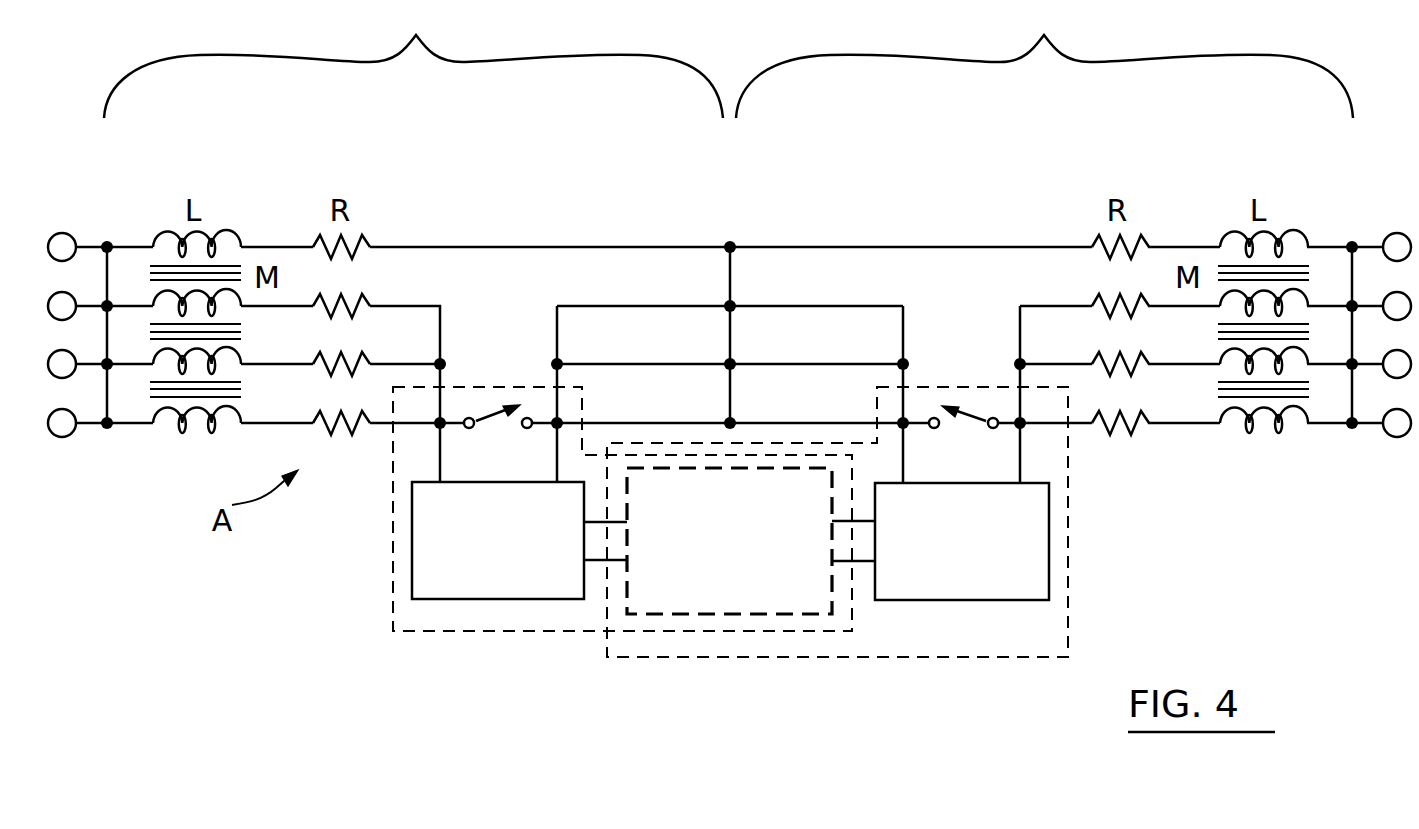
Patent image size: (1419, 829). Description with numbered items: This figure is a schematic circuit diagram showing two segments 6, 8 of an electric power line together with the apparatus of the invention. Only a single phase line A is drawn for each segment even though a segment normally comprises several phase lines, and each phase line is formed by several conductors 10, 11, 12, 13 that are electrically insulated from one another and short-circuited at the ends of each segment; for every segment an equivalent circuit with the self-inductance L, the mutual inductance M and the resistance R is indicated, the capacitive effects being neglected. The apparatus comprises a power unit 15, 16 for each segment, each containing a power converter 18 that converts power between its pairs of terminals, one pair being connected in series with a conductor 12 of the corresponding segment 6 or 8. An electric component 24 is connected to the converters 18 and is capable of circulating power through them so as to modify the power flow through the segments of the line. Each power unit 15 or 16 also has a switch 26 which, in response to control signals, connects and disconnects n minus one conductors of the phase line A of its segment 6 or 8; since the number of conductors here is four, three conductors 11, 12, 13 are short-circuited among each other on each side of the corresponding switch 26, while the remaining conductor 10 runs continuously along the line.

The segment 6 is at (413, 59).
The segment 8 is at (1044, 59).
The conductor 10 is at (643, 247).
The conductor 11 is at (620, 306).
The conductor 12 is at (695, 364).
The conductor 13 is at (610, 423).
The power unit 15 is at (1062, 546).
The power exchange unit 16 is at (402, 535).
The power converter 18 is at (478, 553).
The electric component 24 is at (710, 543).
The switch 26 is at (483, 410).